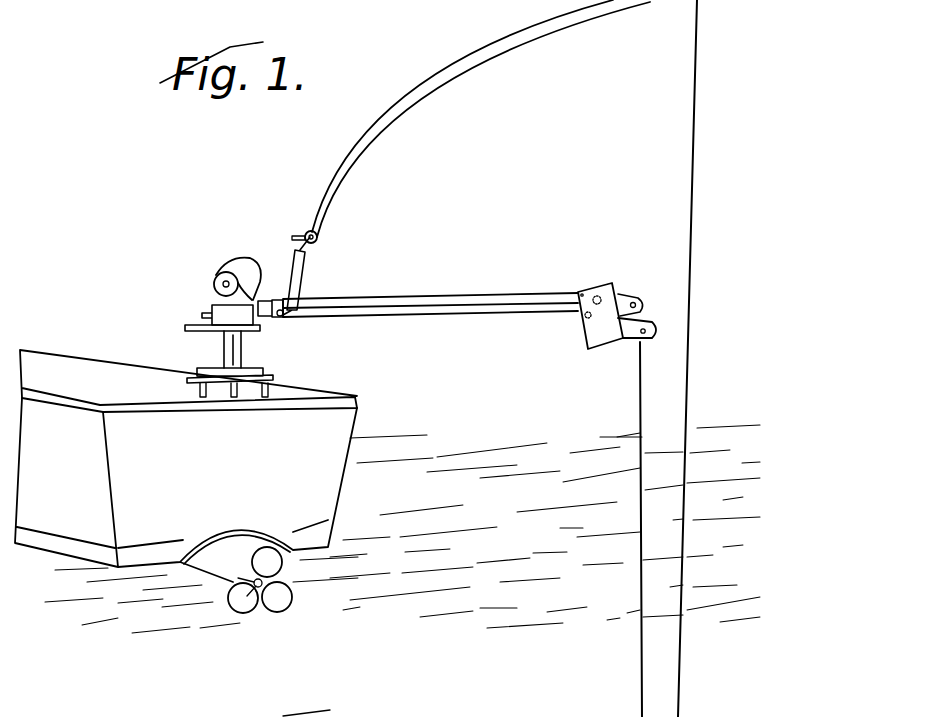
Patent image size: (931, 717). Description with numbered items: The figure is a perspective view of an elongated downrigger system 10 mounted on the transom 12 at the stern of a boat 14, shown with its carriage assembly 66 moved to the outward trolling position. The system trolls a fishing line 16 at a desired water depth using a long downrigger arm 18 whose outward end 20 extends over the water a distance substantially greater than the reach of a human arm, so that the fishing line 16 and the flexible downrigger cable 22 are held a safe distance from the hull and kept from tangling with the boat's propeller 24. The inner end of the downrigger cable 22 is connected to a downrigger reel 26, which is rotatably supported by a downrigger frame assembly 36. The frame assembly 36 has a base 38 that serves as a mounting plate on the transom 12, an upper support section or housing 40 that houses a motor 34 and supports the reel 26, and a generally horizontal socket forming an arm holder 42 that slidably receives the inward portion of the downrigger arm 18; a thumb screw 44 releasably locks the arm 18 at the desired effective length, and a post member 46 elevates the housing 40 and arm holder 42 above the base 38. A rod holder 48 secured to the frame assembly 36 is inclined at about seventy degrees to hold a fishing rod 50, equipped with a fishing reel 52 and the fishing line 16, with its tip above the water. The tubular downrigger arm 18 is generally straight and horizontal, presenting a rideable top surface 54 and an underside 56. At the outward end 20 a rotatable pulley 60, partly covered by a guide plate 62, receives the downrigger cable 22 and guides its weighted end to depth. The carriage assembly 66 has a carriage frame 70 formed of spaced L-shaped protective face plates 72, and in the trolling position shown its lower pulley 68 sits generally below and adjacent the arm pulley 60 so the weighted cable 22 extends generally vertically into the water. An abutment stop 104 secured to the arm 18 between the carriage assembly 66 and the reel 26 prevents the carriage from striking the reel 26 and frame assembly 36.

The downrigger system 10 is at (439, 361).
The transom 12 is at (315, 397).
The boat 14 is at (322, 490).
The fishing line 16 is at (693, 228).
The downrigger arm 18 is at (462, 314).
The outward end 20 is at (625, 292).
The downrigger cable 22 is at (375, 296).
The propeller 24 is at (282, 605).
The downrigger reel 26 is at (219, 280).
The motor 34 is at (226, 268).
The downrigger frame assembly 36 is at (257, 358).
The base 38 is at (193, 392).
The upper support section 40 is at (258, 252).
The arm holder 42 is at (211, 305).
The thumb screw 44 is at (210, 328).
The post member 46 is at (230, 357).
The rod holder 48 is at (298, 277).
The fishing rod 50 is at (413, 103).
The fishing reel 52 is at (323, 232).
The rideable top surface 54 is at (453, 306).
The underside 56 is at (365, 316).
The pulley 60 is at (637, 308).
The guide plate 62 is at (633, 293).
The carriage assembly 66 is at (590, 287).
The lower pulley 68 is at (652, 326).
The carriage frame 70 is at (583, 335).
The face plate 72 is at (618, 345).
The abutment stop 104 is at (283, 313).